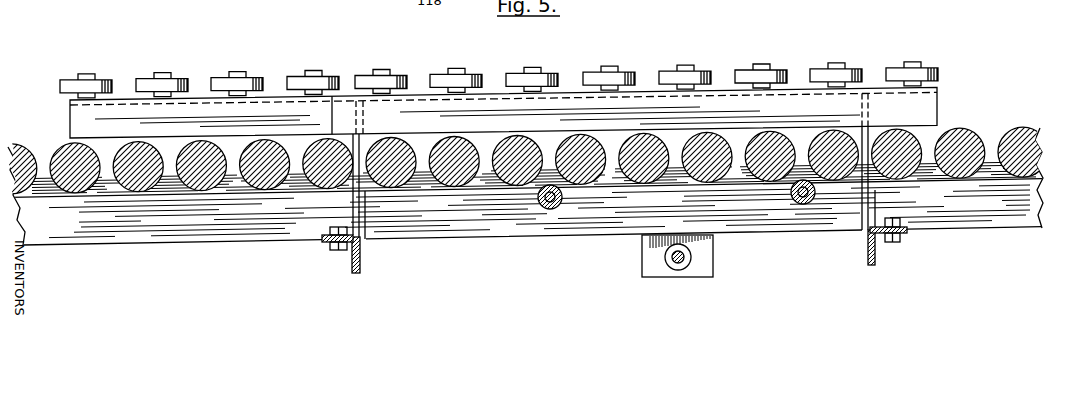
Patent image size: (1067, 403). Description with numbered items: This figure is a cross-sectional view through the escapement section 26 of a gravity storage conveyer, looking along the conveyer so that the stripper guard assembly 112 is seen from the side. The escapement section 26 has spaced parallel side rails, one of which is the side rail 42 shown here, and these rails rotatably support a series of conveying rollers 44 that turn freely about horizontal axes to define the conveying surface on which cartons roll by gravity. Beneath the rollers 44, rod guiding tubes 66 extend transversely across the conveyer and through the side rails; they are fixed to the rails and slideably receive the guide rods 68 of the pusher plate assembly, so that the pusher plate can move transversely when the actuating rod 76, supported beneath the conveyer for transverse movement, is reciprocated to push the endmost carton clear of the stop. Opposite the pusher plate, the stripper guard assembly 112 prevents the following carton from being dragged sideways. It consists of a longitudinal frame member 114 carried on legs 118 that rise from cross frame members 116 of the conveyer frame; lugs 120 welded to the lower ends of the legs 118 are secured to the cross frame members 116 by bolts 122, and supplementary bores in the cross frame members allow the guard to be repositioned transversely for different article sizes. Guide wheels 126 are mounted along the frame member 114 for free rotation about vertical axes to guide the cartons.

The escapement section 26 is at (811, 55).
The side rail 42 is at (687, 217).
The conveying rollers 44 is at (483, 185).
The rod guiding tubes 66 is at (558, 203).
The guide rods 68 is at (562, 195).
The actuating rod 76 is at (692, 257).
The stripper guard assembly 112 is at (489, 97).
The longitudinal frame member 114 is at (645, 114).
The cross frame members 116 is at (361, 262).
The legs 118 is at (366, 203).
The lugs 120 is at (356, 213).
The bolts 122 is at (334, 251).
The guide wheels 126 is at (733, 73).